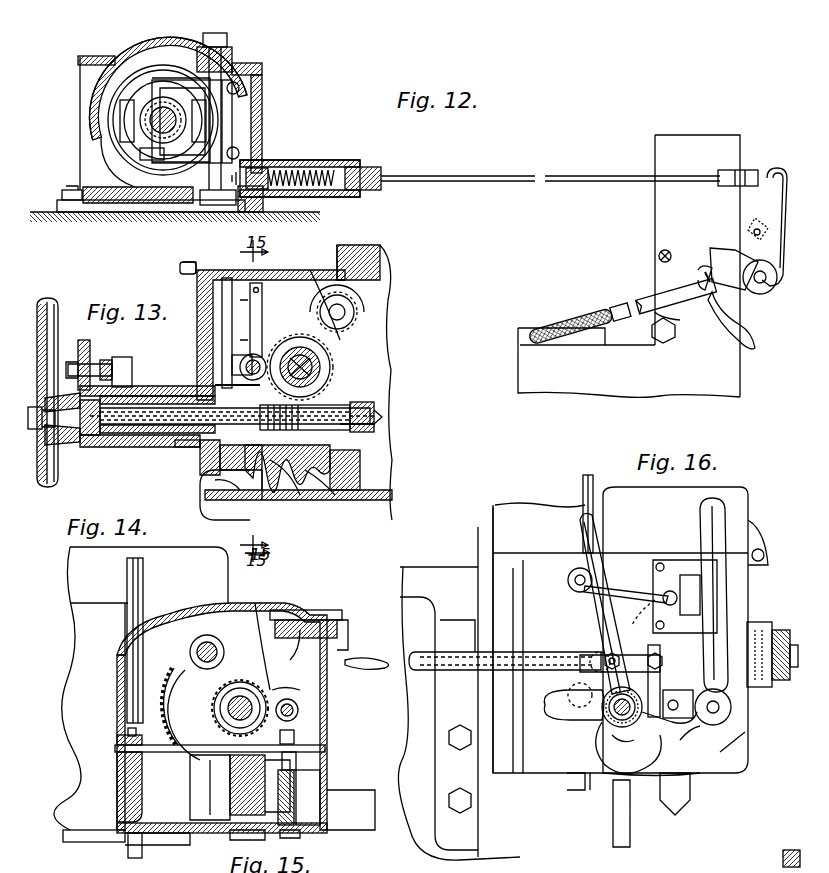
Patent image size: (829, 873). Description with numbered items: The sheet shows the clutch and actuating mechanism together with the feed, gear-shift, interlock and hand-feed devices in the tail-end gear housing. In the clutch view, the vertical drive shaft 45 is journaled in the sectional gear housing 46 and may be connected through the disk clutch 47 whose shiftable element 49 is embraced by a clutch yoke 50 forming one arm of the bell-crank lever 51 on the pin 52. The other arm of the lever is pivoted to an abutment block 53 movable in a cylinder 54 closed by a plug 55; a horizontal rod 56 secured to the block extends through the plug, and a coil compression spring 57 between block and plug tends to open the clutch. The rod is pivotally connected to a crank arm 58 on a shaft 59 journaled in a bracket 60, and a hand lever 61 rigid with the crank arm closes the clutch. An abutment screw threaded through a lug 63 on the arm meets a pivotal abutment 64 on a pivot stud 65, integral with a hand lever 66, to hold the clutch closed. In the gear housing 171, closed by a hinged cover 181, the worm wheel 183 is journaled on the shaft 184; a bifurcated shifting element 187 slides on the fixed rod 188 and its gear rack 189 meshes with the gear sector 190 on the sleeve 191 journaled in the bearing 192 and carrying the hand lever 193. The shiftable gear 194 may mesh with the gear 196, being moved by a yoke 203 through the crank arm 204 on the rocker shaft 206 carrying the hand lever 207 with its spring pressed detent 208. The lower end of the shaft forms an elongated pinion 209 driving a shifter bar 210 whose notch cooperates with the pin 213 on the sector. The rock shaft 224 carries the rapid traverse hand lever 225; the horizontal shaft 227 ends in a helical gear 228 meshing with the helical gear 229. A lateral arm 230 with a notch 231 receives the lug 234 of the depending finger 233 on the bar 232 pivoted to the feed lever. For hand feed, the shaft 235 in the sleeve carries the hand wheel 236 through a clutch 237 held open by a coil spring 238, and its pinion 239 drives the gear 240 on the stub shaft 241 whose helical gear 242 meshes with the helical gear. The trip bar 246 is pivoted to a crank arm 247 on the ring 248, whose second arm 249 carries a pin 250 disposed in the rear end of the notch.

In FIG. 12, the vertical drive shaft 45 is at (160, 130).
In FIG. 12, the sectional gear housing 46 is at (175, 52).
In FIG. 12, the disk clutch 47 is at (112, 96).
In FIG. 12, the shiftable element 49 is at (142, 95).
In FIG. 12, the clutch yoke 50 is at (225, 112).
In FIG. 12, the bell-crank lever 51 is at (215, 205).
In FIG. 12, the pin 52 is at (233, 55).
In FIG. 12, the abutment block 53 is at (262, 175).
In FIG. 12, the cylinder 54 is at (340, 163).
In FIG. 12, the plug 55 is at (375, 170).
In FIG. 12, the horizontal rod 56 is at (455, 175).
In FIG. 12, the coil compression spring 57 is at (305, 172).
In FIG. 12, the crank arm 58 is at (777, 218).
In FIG. 12, the shaft 59 is at (768, 272).
In FIG. 14, the shaft 59 is at (128, 620).
In FIG. 16, the shaft 59 is at (583, 478).
In FIG. 12, the bracket 60 is at (659, 255).
In FIG. 12, the hand lever 61 is at (618, 312).
In FIG. 12, the lug 63 is at (750, 226).
In FIG. 12, the pivotal abutment 64 is at (715, 252).
In FIG. 12, the pivot stud 65 is at (698, 273).
In FIG. 12, the hand lever 66 is at (755, 340).
In FIG. 13, the gear housing 171 is at (388, 282).
In FIG. 14, the gear housing 171 is at (285, 610).
In FIG. 16, the gear housing 171 is at (735, 726).
In FIG. 16, the hinged cover 181 is at (740, 500).
In FIG. 14, the worm wheel 183 is at (175, 695).
In FIG. 13, the shaft 184 is at (333, 360).
In FIG. 14, the shaft 184 is at (243, 695).
In FIG. 13, the bifurcated shifting element 187 is at (330, 290).
In FIG. 14, the bifurcated shifting element 187 is at (300, 688).
In FIG. 13, the fixed rod 188 is at (262, 356).
In FIG. 14, the fixed rod 188 is at (298, 712).
In FIG. 13, the gear rack 189 is at (238, 372).
In FIG. 14, the gear rack 189 is at (296, 735).
In FIG. 13, the gear sector 190 is at (240, 385).
In FIG. 14, the gear sector 190 is at (325, 748).
In FIG. 13, the sleeve 191 is at (210, 500).
In FIG. 13, the bearing 192 is at (160, 460).
In FIG. 13, the hand lever 193 is at (84, 342).
In FIG. 16, the hand lever 193 is at (598, 610).
In FIG. 13, the gear 194 is at (330, 372).
In FIG. 13, the gear 196 is at (358, 318).
In FIG. 13, the yoke 203 is at (228, 345).
In FIG. 13, the crank arm 204 is at (262, 310).
In FIG. 14, the rocker shaft 206 is at (320, 618).
In FIG. 16, the rocker shaft 206 is at (568, 580).
In FIG. 13, the hand lever 207 is at (185, 280).
In FIG. 14, the hand lever 207 is at (378, 658).
In FIG. 16, the hand lever 207 is at (632, 585).
In FIG. 14, the spring pressed detent 208 is at (345, 635).
In FIG. 16, the spring pressed detent 208 is at (680, 594).
In FIG. 14, the elongated pinion 209 is at (125, 735).
In FIG. 14, the shifter bar 210 is at (130, 748).
In FIG. 14, the pin 213 is at (296, 760).
In FIG. 16, the rock shaft 224 is at (720, 708).
In FIG. 16, the hand lever 225 is at (715, 600).
In FIG. 13, the horizontal shaft 227 is at (366, 410).
In FIG. 13, the helical gear 228 is at (370, 430).
In FIG. 14, the helical gear 228 is at (232, 775).
In FIG. 13, the helical gear 229 is at (325, 368).
In FIG. 14, the helical gear 229 is at (210, 690).
In FIG. 16, the lateral arm 230 is at (692, 697).
In FIG. 16, the notch 231 is at (692, 715).
In FIG. 16, the bar 232 is at (455, 648).
In FIG. 16, the depending finger 233 is at (660, 690).
In FIG. 16, the lug 234 is at (668, 722).
In FIG. 13, the shaft 235 is at (185, 450).
In FIG. 16, the shaft 235 is at (608, 718).
In FIG. 13, the hand wheel 236 is at (52, 302).
In FIG. 13, the clutch 237 is at (72, 430).
In FIG. 16, the clutch 237 is at (600, 707).
In FIG. 13, the coil spring 238 is at (105, 445).
In FIG. 16, the coil spring 238 is at (614, 718).
In FIG. 13, the pinion 239 is at (235, 500).
In FIG. 13, the gear 240 is at (275, 480).
In FIG. 14, the gear 240 is at (292, 815).
In FIG. 13, the stub shaft 241 is at (312, 475).
In FIG. 14, the stub shaft 241 is at (315, 800).
In FIG. 13, the helical gear 242 is at (345, 470).
In FIG. 14, the helical gear 242 is at (235, 805).
In FIG. 13, the horizontal bar 246 is at (108, 360).
In FIG. 13, the crank arm 247 is at (127, 358).
In FIG. 16, the crank arm 247 is at (592, 660).
In FIG. 13, the ring 248 is at (150, 432).
In FIG. 16, the second arm 249 is at (642, 745).
In FIG. 16, the pin 250 is at (720, 745).